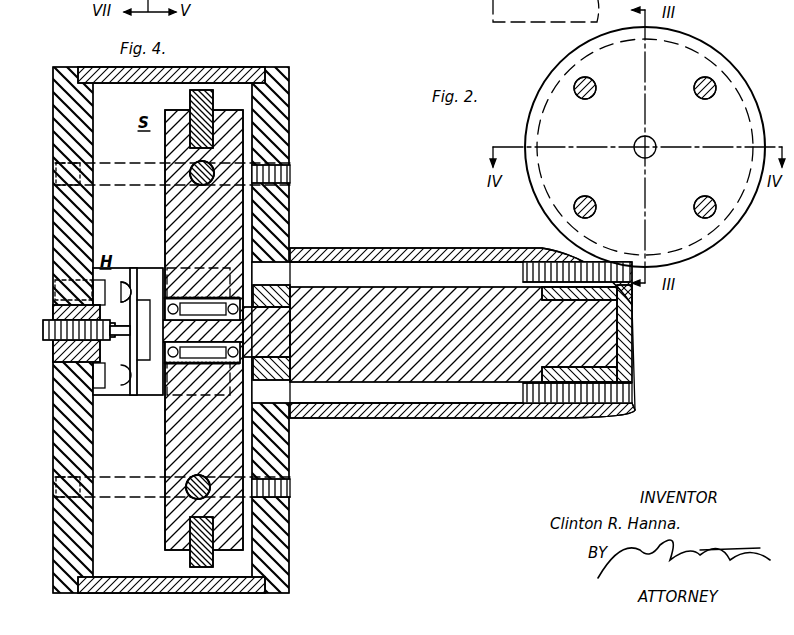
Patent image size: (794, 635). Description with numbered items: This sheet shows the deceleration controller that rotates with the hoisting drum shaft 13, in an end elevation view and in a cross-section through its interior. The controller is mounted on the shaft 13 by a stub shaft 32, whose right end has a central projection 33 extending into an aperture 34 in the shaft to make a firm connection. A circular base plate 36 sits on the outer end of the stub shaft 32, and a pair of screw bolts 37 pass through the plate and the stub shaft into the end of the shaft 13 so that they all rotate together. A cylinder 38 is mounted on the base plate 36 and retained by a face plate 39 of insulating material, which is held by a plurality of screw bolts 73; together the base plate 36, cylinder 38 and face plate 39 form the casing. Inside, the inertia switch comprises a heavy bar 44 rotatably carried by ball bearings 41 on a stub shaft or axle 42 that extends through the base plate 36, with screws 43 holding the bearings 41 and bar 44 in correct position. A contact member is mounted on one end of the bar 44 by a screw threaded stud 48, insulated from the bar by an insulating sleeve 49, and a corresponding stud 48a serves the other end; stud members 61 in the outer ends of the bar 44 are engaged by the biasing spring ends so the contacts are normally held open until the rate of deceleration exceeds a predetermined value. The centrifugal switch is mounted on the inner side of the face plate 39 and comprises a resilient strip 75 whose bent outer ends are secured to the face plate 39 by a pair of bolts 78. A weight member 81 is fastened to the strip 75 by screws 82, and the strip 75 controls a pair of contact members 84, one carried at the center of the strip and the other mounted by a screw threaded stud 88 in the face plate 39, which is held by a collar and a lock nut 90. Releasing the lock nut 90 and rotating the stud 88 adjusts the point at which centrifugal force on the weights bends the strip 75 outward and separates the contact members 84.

In FIG. 4, the shaft 13 is at (550, 257).
In FIG. 4, the stub shaft 32 is at (352, 241).
In FIG. 4, the central projection 33 is at (620, 326).
In FIG. 4, the aperture 34 is at (633, 371).
In FIG. 4, the circular base plate 36 is at (287, 217).
In FIG. 4, the screw bolts 37 is at (400, 268).
In FIG. 4, the cylinder 38 is at (233, 3).
In FIG. 4, the face plate 39 is at (60, 215).
In FIG. 4, the ball bearings 41 is at (168, 362).
In FIG. 4, the stub shaft or axle 42 is at (168, 383).
In FIG. 4, the screws 43 is at (157, 323).
In FIG. 4, the heavy bar 44 is at (165, 203).
In FIG. 4, the screw threaded stud 48 is at (190, 174).
In FIG. 4, the screw threaded stud 48a is at (188, 482).
In FIG. 4, the insulating sleeve 49 is at (214, 170).
In FIG. 4, the stud members 61 is at (190, 96).
In FIG. 4, the screw bolts 73 is at (128, 170).
In FIG. 2, the screw bolts 73 is at (596, 88).
In FIG. 4, the resilient strip 75 is at (134, 268).
In FIG. 4, the bolts 78 is at (108, 268).
In FIG. 4, the weight member 81 is at (150, 395).
In FIG. 4, the screws 82 is at (122, 283).
In FIG. 4, the contact members 84 is at (117, 322).
In FIG. 4, the screw threaded stud 88 is at (44, 333).
In FIG. 4, the lock nut 90 is at (57, 308).